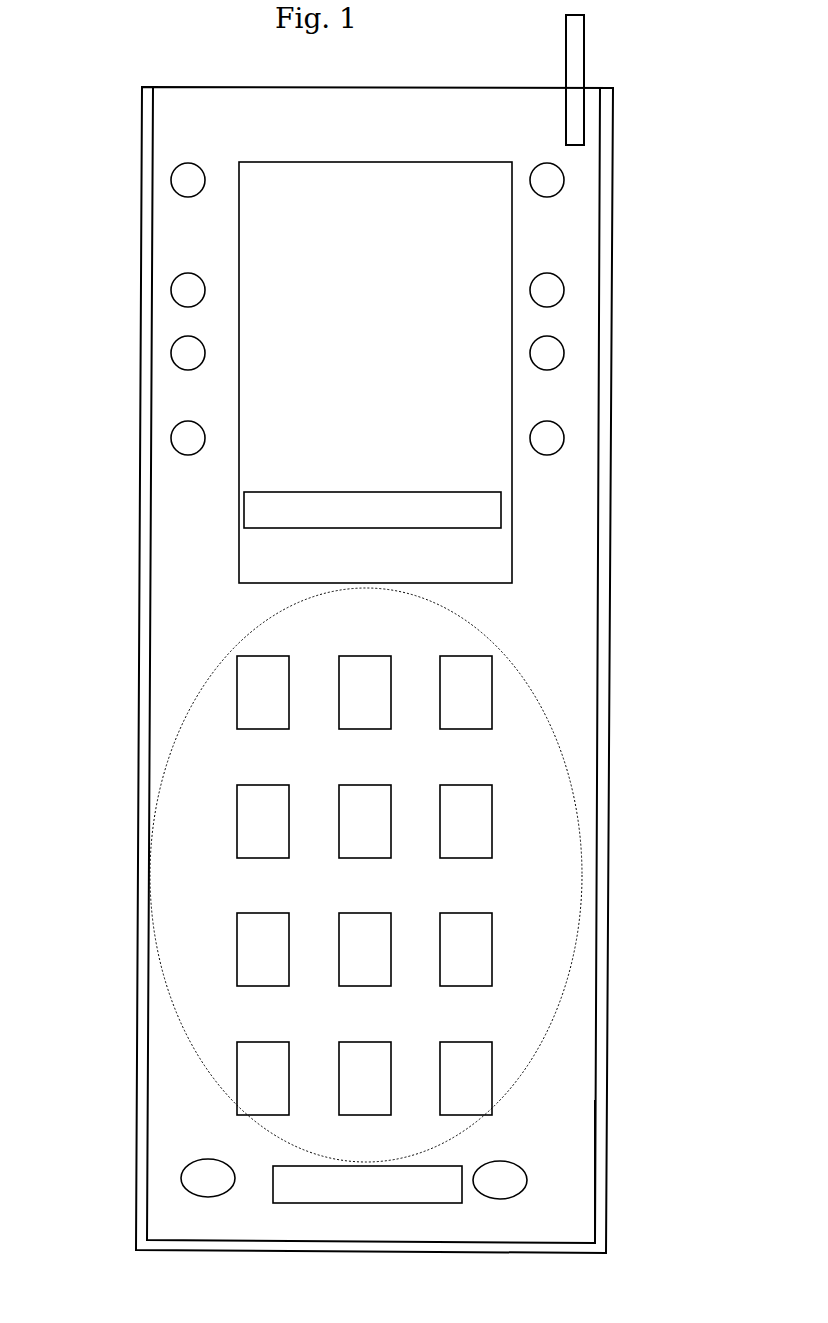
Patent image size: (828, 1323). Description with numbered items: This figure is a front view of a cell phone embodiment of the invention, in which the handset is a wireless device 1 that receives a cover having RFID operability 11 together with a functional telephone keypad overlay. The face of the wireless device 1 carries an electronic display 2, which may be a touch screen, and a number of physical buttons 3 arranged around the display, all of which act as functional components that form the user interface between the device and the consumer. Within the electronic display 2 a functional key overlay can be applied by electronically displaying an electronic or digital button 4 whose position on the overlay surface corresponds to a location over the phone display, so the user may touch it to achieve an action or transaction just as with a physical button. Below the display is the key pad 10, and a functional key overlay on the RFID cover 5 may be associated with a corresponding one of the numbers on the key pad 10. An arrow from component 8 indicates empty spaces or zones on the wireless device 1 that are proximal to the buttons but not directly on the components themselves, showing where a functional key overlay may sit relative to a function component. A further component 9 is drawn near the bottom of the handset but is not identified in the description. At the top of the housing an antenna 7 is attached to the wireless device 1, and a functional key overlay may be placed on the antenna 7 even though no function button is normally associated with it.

The wireless device 1 is at (366, 631).
The electronic display 2 is at (371, 160).
The physical buttons 3 is at (530, 202).
The electronic or digital button 4 is at (358, 491).
The functional key overlay on the RFID cover 5 is at (482, 742).
The antenna 7 is at (570, 105).
The empty spaces or zones 8 is at (540, 1115).
The bottom key 9 is at (292, 1160).
The key pad 10 is at (183, 723).
The cover having RFID operability 11 is at (140, 300).